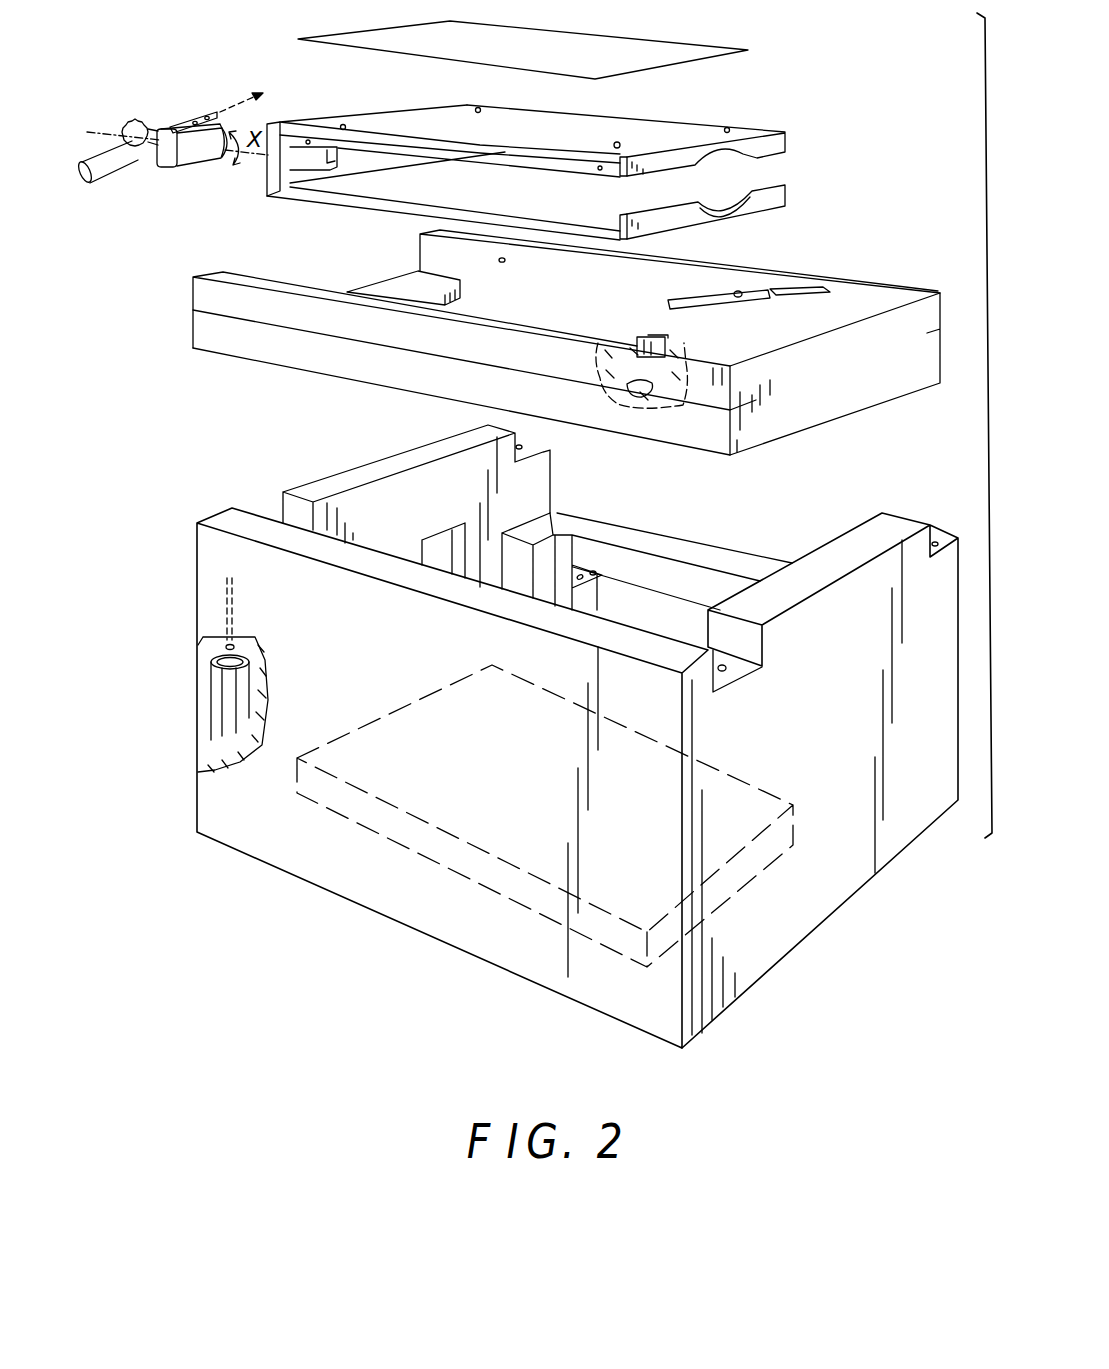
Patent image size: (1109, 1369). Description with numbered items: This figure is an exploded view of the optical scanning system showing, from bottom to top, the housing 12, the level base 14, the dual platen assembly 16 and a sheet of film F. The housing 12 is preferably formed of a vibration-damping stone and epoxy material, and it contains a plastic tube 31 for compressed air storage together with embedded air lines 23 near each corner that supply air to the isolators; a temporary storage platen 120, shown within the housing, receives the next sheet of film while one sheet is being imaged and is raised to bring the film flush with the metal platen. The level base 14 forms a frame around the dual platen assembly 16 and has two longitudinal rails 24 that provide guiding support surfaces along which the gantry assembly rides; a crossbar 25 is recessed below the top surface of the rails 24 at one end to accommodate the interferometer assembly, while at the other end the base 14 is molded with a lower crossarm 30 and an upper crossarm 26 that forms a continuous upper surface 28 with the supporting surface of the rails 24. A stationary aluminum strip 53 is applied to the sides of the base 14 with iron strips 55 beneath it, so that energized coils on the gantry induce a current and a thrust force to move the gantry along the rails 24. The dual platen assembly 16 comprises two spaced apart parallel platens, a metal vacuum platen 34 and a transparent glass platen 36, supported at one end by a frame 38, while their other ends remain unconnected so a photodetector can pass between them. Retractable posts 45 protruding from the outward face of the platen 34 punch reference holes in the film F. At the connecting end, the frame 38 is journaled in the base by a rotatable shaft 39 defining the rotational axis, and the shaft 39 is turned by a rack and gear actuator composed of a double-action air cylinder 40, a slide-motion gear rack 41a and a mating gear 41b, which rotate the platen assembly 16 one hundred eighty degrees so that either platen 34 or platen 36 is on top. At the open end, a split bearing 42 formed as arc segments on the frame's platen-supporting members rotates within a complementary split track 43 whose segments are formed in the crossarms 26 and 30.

The sheet of film F is at (680, 50).
The housing 12 is at (572, 736).
The level base 14 is at (550, 341).
The dual platen assembly 16 is at (523, 161).
The air lines 23 is at (235, 602).
The longitudinal rails 24 is at (203, 290).
The crossbar 25 is at (378, 290).
The upper crossarm 26 is at (637, 345).
The upper surface 28 is at (795, 304).
The lower crossarm 30 is at (617, 398).
The tube 31 is at (222, 700).
The metal platen 34 is at (612, 118).
The transparent glass platen 36 is at (664, 200).
The frame 38 is at (270, 168).
The rotatable shaft 39 is at (197, 158).
The double-action air cylinder 40 is at (103, 182).
The gear rack 41a is at (205, 113).
The mating gear 41b is at (135, 116).
The split bearing 42 is at (745, 152).
The split track 43 is at (710, 305).
The retractable posts 45 is at (480, 112).
The aluminum strip 53 is at (207, 332).
The iron strips 55 is at (748, 438).
The temporary storage platen 120 is at (365, 815).